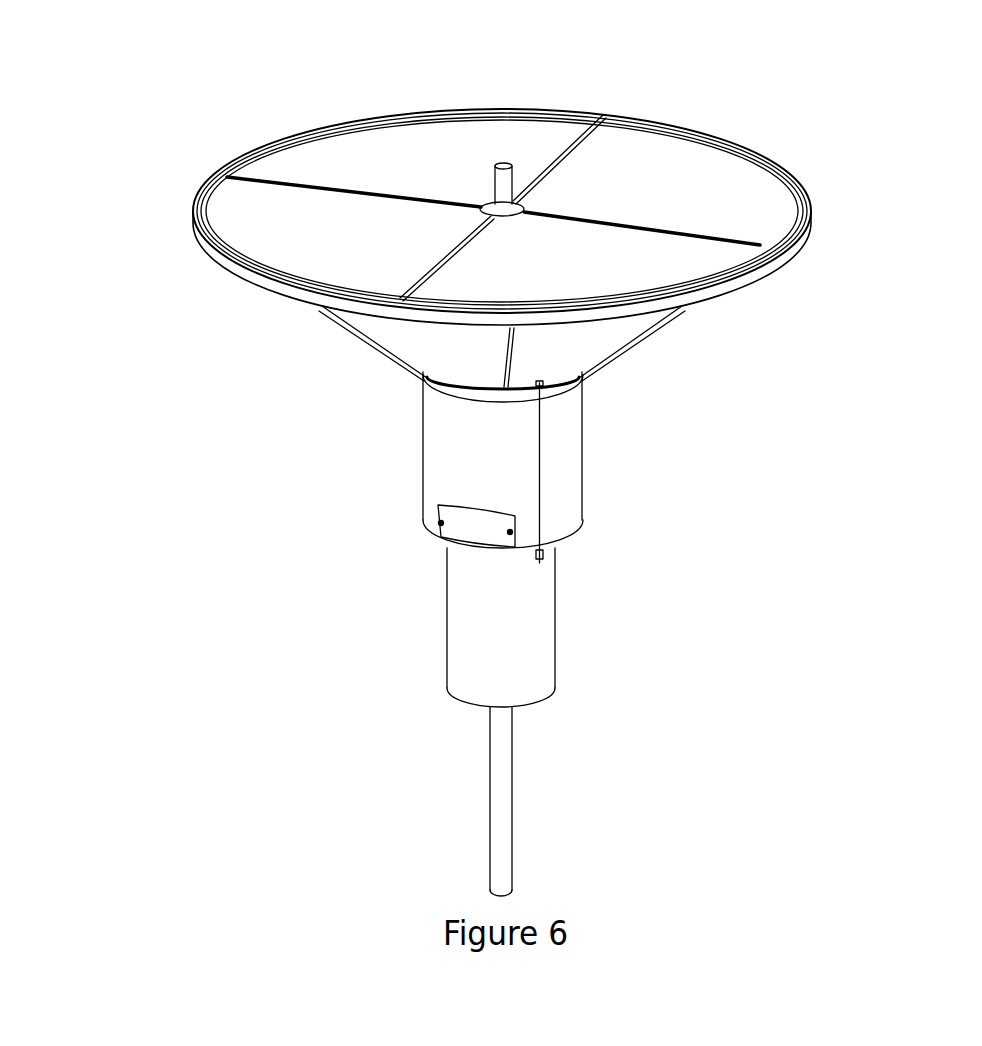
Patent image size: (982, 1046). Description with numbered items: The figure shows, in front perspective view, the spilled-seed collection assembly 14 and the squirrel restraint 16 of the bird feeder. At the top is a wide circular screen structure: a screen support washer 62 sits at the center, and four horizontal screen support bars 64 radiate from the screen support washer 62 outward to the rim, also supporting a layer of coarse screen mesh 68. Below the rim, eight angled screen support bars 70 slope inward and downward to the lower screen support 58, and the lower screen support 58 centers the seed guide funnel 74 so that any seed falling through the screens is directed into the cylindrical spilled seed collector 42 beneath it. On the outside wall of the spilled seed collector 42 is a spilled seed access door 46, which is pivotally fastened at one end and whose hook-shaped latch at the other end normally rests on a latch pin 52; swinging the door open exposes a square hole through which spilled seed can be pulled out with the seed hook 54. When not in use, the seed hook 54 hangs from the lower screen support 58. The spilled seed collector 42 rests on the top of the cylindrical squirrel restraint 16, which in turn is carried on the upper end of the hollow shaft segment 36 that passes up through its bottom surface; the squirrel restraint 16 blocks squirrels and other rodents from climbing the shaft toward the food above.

The spilled-seed collection assembly 14 is at (305, 400).
The squirrel restraint 16 is at (505, 636).
The hollow shaft segment 36 is at (497, 828).
The spilled seed collector 42 is at (452, 457).
The spilled seed access door 46 is at (462, 534).
The latch pin 52 is at (418, 518).
The seed hook 54 is at (543, 490).
The lower screen support 58 is at (562, 391).
The screen support washer 62 is at (548, 204).
The horizontal screen support bars 64 is at (244, 159).
The coarse screen mesh 68 is at (308, 252).
The angled screen support bars 70 is at (649, 349).
The seed guide funnel 74 is at (737, 326).